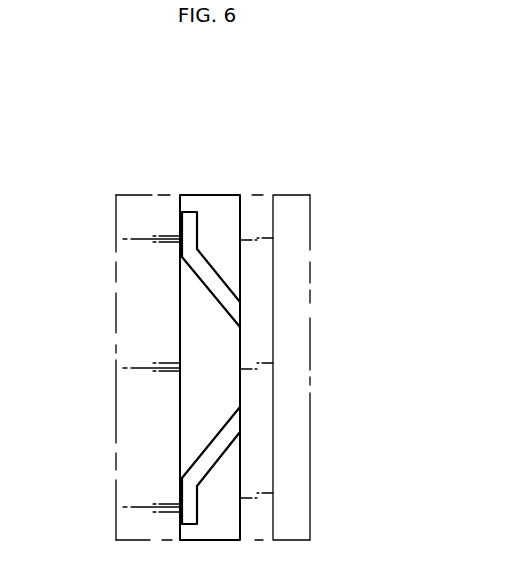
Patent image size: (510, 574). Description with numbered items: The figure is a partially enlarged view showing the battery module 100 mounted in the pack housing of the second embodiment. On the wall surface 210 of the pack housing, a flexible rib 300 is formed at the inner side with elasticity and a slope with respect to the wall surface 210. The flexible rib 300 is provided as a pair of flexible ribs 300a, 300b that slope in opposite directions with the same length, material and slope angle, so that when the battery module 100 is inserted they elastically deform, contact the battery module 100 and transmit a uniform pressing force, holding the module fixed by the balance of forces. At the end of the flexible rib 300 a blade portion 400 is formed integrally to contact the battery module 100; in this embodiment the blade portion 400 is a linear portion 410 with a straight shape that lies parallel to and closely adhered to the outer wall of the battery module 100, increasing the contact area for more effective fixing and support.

The blade portion 400 is at (207, 301).
The battery module 100 is at (139, 327).
The wall surface 210 is at (273, 283).
The flexible rib 300 is at (166, 333).
The flexible rib 300a is at (210, 283).
The flexible rib 300b is at (212, 450).
The linear portion 410 is at (187, 226).